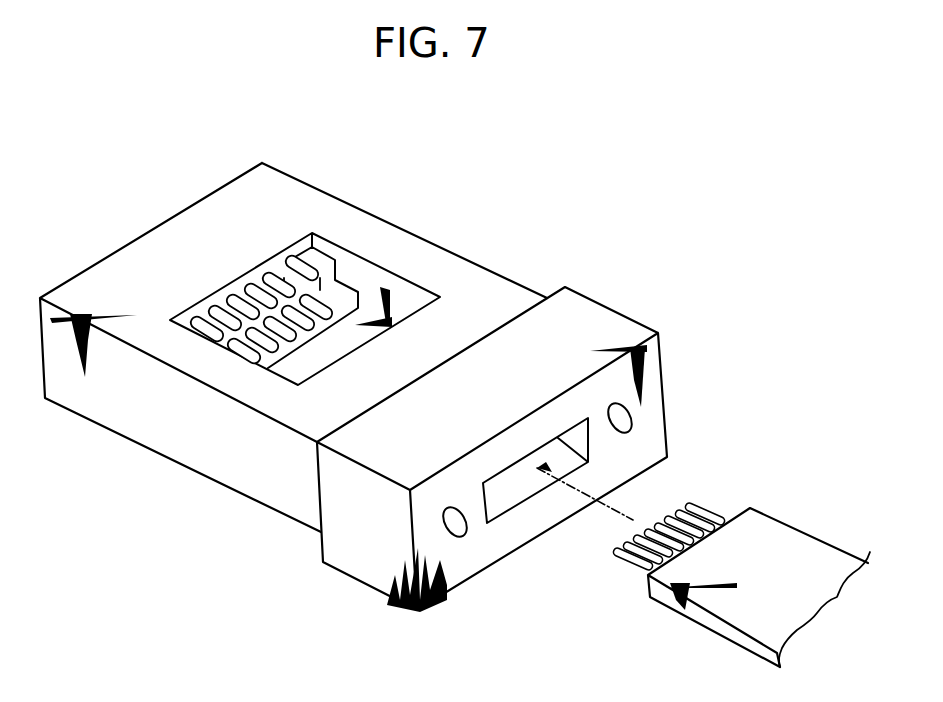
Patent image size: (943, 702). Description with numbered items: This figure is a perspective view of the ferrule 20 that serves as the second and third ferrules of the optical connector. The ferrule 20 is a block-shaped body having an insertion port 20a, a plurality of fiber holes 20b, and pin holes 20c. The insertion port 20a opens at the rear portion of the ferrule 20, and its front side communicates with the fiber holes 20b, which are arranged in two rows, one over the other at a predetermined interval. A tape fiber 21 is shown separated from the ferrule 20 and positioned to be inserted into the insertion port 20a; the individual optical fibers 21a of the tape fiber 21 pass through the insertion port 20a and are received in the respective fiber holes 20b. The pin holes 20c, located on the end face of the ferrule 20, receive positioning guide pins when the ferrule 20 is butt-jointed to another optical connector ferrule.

The ferrule 20 is at (343, 200).
The insertion port 20a is at (505, 488).
The fiber holes 20b is at (277, 268).
The pin holes 20c is at (458, 536).
The tape fiber 21 is at (807, 533).
The optical fibers 21a is at (700, 500).